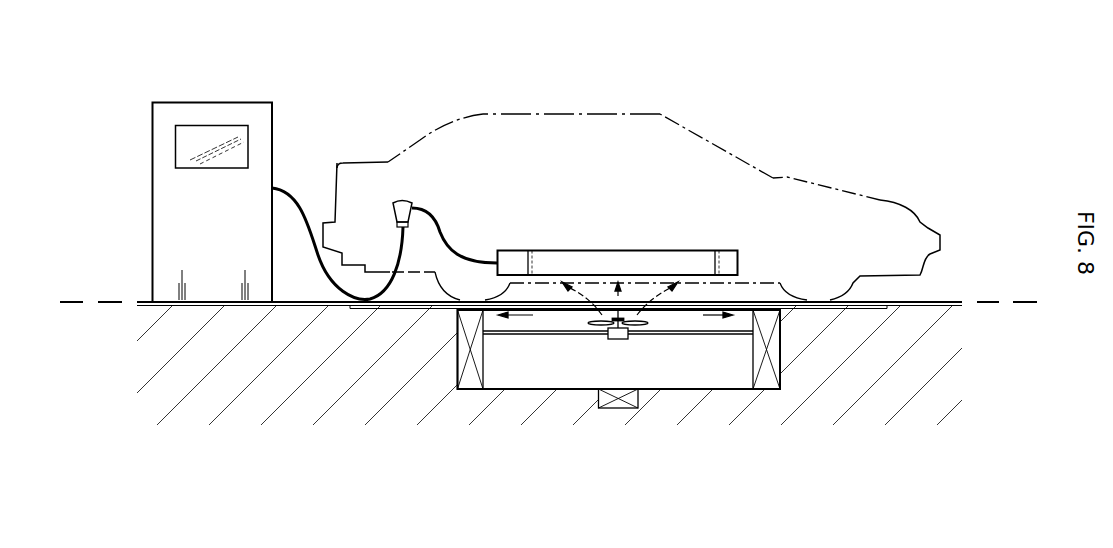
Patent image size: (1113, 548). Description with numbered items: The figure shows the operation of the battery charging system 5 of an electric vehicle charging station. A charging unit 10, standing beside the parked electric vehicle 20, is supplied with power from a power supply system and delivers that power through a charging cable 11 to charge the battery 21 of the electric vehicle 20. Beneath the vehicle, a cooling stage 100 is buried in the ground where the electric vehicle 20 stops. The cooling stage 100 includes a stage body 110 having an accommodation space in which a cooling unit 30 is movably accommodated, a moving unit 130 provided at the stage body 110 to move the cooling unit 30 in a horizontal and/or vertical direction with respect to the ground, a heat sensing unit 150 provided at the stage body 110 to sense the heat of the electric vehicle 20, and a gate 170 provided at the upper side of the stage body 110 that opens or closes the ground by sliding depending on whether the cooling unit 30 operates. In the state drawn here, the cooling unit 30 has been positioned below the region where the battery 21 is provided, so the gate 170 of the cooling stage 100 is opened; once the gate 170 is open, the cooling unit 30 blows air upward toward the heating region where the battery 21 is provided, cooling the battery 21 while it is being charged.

The battery charging system 5 is at (336, 80).
The charging unit 10 is at (243, 102).
The charging cable 11 is at (291, 193).
The electric vehicle 20 is at (568, 114).
The battery 21 is at (666, 250).
The cooling unit 30 is at (617, 339).
The cooling stage 100 is at (452, 396).
The stage body 110 is at (713, 389).
The moving unit 130 is at (472, 386).
The heat sensing unit 150 is at (618, 408).
The gate 170 is at (493, 313).